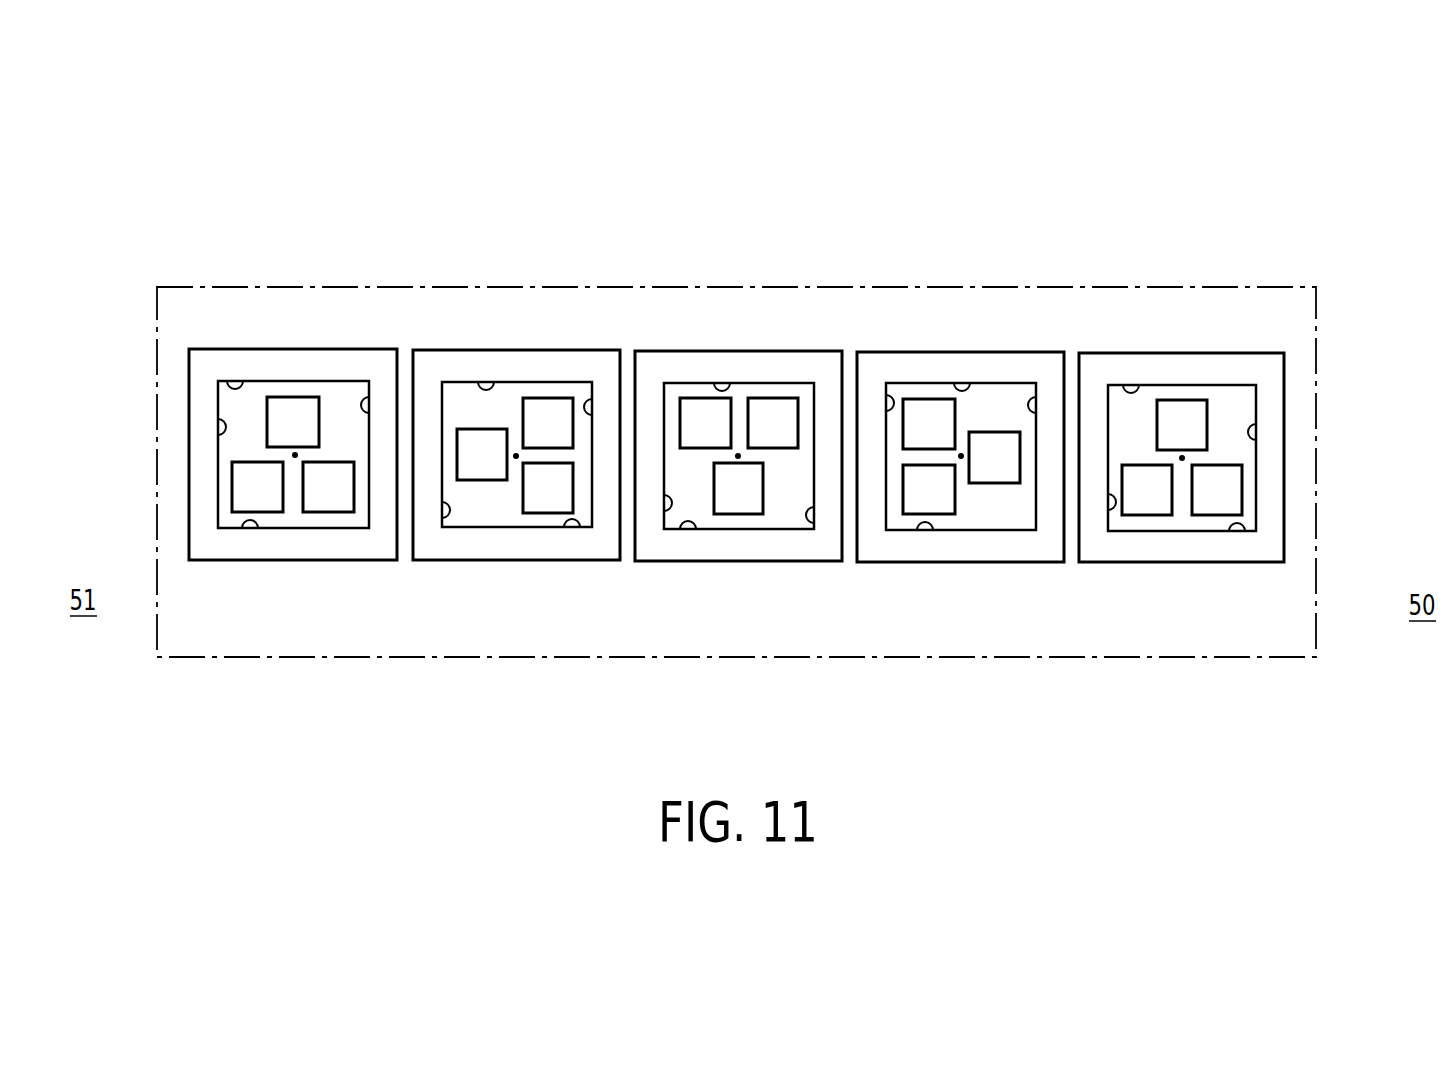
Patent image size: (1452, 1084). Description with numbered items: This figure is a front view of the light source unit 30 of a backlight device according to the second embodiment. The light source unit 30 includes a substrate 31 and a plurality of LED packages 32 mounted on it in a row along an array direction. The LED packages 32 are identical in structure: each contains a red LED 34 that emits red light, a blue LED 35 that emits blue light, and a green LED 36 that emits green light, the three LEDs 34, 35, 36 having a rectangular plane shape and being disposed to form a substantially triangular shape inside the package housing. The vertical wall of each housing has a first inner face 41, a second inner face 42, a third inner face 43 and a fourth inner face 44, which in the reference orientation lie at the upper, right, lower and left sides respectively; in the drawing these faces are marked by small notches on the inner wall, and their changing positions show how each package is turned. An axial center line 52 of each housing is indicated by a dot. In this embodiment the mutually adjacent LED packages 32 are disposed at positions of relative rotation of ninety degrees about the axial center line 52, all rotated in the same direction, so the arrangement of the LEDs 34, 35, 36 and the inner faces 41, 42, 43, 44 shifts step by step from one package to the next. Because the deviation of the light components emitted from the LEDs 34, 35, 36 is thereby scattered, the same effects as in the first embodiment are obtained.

The light source unit 30 is at (1210, 274).
The substrate 31 is at (1274, 302).
The LED package 32 is at (249, 336).
The red LED 34 is at (325, 500).
The blue LED 35 is at (242, 491).
The green LED 36 is at (303, 410).
The first inner face 41 is at (228, 383).
The second inner face 42 is at (366, 402).
The third inner face 43 is at (250, 530).
The fourth inner face 44 is at (224, 427).
The axial center line 52 is at (295, 458).